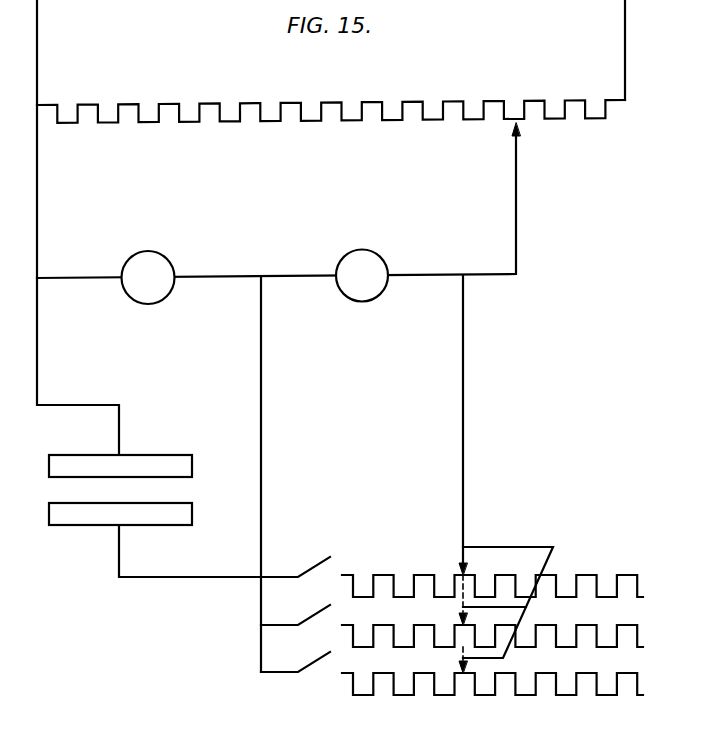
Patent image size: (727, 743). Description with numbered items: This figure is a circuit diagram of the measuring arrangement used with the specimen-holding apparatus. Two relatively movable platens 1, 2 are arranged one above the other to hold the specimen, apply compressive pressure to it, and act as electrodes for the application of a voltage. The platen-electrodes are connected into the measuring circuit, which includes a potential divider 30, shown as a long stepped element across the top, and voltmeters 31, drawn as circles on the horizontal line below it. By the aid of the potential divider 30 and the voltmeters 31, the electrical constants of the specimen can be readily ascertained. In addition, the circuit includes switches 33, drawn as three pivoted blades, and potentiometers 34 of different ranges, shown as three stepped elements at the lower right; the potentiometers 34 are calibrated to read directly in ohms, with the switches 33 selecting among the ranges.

The platen 1 is at (60, 454).
The platen 2 is at (62, 522).
The potential divider 30 is at (321, 104).
The voltmeter 31 is at (170, 262).
The switch 33 is at (322, 556).
The potentiometer 34 is at (587, 574).